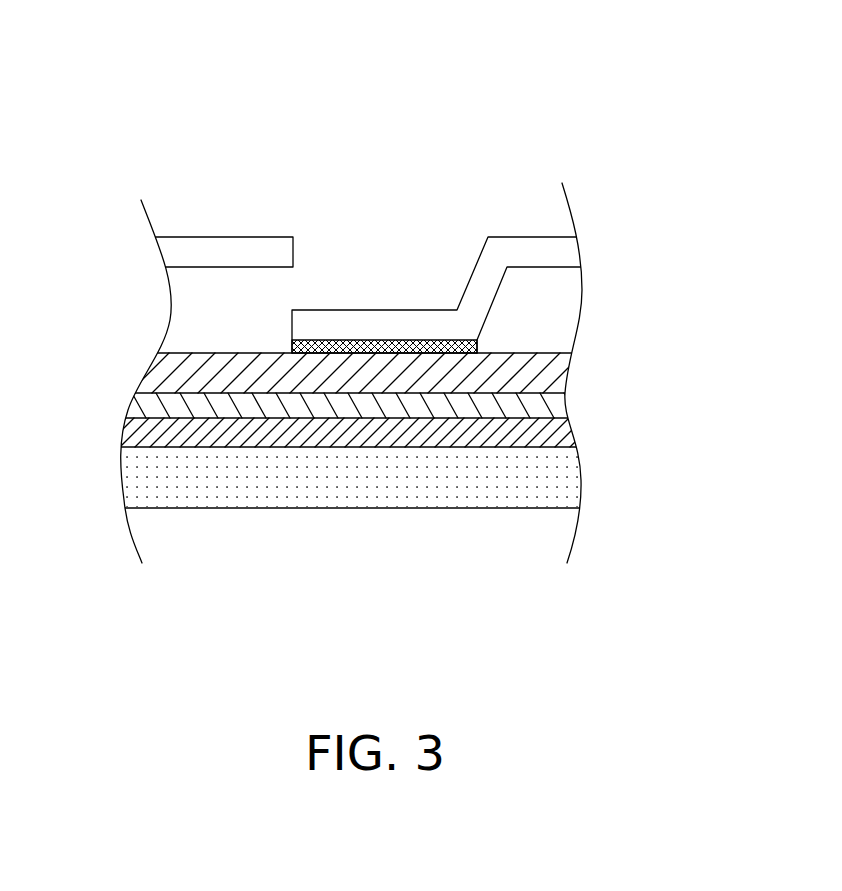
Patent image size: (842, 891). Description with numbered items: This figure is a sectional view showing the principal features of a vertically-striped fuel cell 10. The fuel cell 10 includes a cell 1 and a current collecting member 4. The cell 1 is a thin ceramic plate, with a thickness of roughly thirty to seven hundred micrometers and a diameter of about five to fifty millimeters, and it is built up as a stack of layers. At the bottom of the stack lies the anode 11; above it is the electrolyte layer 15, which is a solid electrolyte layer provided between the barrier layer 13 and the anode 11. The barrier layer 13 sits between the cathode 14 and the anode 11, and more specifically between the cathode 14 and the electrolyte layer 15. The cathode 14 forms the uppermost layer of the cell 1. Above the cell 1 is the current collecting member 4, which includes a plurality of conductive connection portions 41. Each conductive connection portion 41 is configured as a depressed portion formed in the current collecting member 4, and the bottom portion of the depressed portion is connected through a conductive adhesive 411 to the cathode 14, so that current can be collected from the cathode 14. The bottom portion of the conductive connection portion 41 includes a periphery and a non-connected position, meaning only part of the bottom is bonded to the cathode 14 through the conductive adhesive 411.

The fuel cell 10 is at (136, 98).
The cell 1 is at (680, 381).
The current collecting member 4 is at (220, 237).
The conductive connection portion 41 is at (373, 310).
The conductive adhesive 411 is at (477, 343).
The cathode 14 is at (175, 368).
The barrier layer 13 is at (553, 412).
The electrolyte layer 15 is at (130, 433).
The anode 11 is at (555, 487).